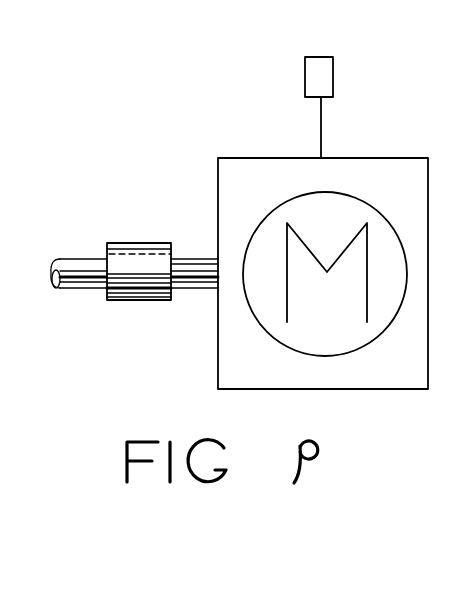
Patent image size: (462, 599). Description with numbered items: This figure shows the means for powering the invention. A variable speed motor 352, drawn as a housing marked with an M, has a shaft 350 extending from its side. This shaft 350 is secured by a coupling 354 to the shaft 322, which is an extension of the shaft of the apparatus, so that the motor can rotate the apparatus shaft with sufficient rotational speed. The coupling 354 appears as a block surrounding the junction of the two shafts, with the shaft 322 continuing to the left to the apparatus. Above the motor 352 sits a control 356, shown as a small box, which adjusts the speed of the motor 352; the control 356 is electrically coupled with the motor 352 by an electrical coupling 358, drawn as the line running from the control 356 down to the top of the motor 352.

The shaft 322 is at (77, 258).
The shaft 350 is at (202, 270).
The variable speed motor 352 is at (228, 367).
The coupling 354 is at (137, 250).
The control 356 is at (323, 84).
The electrical coupling 358 is at (322, 132).